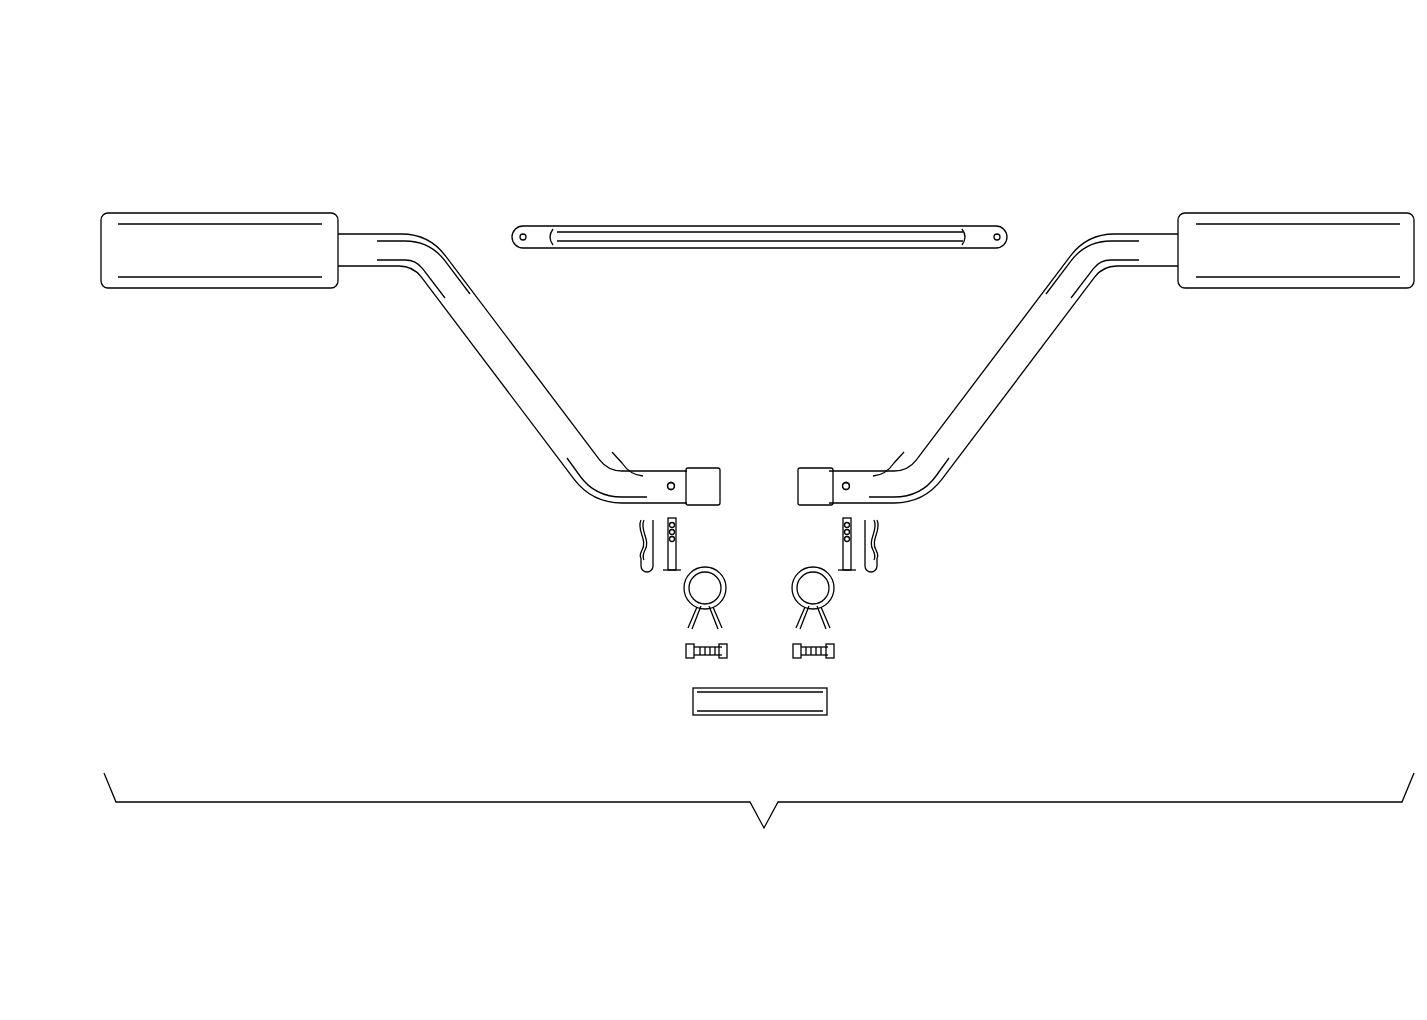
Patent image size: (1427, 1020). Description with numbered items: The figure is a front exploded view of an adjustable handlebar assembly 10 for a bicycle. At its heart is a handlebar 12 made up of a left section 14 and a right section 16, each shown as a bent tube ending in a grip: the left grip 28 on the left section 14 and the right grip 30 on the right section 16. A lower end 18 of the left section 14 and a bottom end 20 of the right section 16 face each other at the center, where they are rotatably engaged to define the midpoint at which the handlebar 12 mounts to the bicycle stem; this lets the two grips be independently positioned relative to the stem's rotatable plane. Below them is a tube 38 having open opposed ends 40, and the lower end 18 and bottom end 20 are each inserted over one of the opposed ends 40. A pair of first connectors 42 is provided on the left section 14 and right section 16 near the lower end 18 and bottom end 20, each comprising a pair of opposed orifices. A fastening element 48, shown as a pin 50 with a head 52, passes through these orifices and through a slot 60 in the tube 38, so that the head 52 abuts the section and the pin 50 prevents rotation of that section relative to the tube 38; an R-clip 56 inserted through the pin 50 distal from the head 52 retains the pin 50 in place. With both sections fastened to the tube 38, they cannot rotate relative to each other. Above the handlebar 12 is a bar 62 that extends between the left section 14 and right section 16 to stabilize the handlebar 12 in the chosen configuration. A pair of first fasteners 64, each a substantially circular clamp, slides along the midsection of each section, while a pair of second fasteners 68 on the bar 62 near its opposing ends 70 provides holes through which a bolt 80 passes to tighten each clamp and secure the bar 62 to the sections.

The adjustable handlebar assembly 10 is at (996, 136).
The handlebar 12 is at (573, 413).
The left section 14 is at (462, 338).
The right section 16 is at (1043, 355).
The lower end 18 is at (720, 470).
The bottom end 20 is at (799, 470).
The left grip 28 is at (222, 211).
The right grip 30 is at (1300, 212).
The tube 38 is at (815, 704).
The opposed ends 40 is at (697, 708).
The first connectors 42 is at (833, 491).
The fastening element 48 is at (667, 543).
The pin 50 is at (672, 562).
The head 52 is at (851, 568).
The R-clip 56 is at (636, 572).
The slot 60 is at (720, 687).
The bar 62 is at (742, 222).
The first fasteners 64 is at (748, 598).
The second fasteners 68 is at (530, 237).
The opposing ends 70 is at (990, 223).
The bolt 80 is at (826, 652).